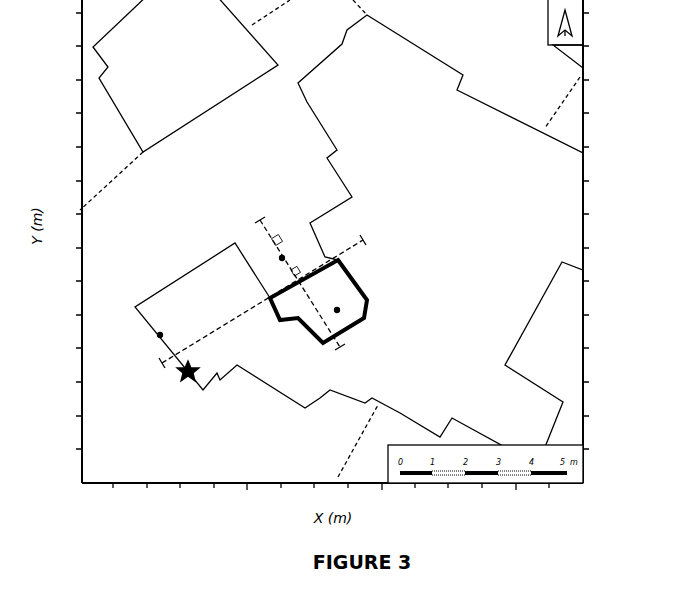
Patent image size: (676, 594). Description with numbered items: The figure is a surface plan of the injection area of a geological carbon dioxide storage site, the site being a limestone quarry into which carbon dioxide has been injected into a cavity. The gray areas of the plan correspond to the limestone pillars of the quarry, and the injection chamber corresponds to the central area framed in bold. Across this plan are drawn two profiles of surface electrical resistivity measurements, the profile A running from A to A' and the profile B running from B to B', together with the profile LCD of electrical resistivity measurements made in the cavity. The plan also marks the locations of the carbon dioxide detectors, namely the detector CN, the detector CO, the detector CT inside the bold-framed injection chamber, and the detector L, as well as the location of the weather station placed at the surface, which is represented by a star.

The CO2 detector CT is at (318, 301).
The CO2 detector CN is at (279, 255).
The CO2 detector CO is at (268, 328).
The CO2 detector L is at (153, 340).
The LCD line along section A-A' LCD is at (211, 318).
The surface electrical resistivity measurement profile A is at (260, 304).
The surface electrical resistivity measurement profile B is at (296, 286).